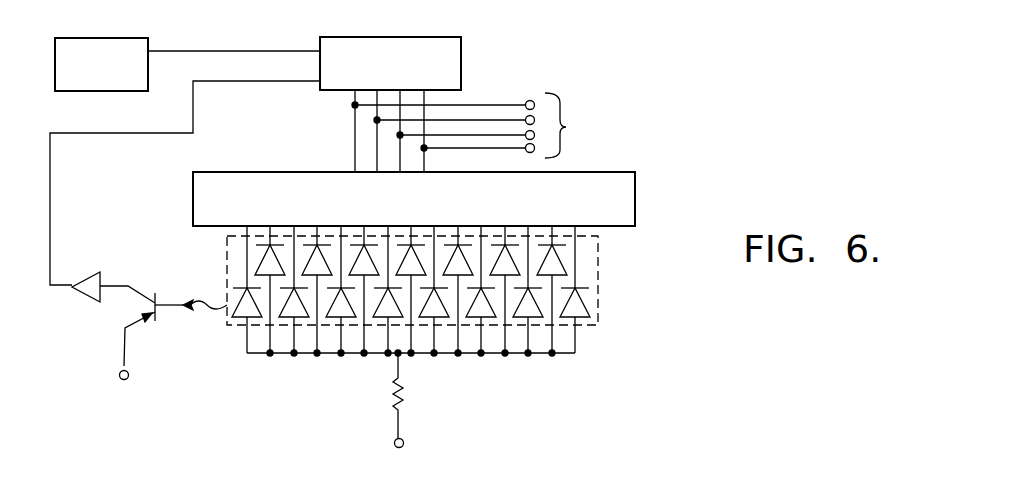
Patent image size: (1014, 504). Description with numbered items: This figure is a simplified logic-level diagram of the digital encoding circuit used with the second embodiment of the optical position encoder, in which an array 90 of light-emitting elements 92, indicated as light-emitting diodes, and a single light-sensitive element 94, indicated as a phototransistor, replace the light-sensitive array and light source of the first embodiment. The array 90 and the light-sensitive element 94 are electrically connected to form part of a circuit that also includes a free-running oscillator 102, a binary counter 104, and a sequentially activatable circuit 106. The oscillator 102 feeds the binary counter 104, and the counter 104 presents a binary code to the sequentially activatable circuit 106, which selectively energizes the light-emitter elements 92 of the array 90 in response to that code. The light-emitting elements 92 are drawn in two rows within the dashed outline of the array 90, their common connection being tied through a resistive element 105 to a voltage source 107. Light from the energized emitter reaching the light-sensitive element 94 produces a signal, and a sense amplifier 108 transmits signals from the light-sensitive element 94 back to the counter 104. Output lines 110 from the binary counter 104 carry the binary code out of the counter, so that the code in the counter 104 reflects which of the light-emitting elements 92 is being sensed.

The array of light-emitting elements 90 is at (441, 291).
The light-emitting elements 92 is at (583, 318).
The photosensitive element 94 is at (157, 316).
The free-running oscillator 102 is at (83, 38).
The binary counter 104 is at (461, 38).
The resistive element 105 is at (404, 398).
The sequentially activatable circuit 106 is at (635, 192).
The voltage source 107 is at (404, 444).
The sense amplifier 108 is at (84, 299).
The output lines 110 is at (566, 127).